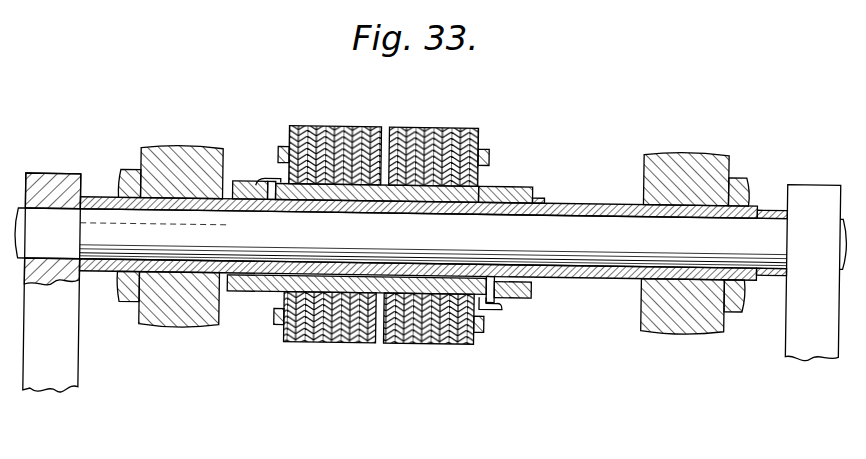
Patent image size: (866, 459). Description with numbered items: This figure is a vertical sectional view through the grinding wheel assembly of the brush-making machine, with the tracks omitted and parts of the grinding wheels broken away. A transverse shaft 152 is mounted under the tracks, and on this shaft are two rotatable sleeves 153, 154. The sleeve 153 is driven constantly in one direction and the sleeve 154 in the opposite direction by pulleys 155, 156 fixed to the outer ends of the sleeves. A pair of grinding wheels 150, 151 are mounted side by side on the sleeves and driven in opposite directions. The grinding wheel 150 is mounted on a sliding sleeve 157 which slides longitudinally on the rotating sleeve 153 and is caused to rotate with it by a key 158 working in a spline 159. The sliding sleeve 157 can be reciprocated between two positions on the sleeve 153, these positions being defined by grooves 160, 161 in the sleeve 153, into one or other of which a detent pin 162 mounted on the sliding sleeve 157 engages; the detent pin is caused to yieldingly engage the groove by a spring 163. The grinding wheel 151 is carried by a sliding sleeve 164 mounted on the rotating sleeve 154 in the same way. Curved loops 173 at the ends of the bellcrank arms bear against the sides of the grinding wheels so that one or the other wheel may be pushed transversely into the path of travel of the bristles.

The grinding wheel 150 is at (440, 121).
The grinding wheel 151 is at (355, 109).
The transverse shaft 152 is at (595, 217).
The rotatable sleeve 153 is at (588, 275).
The rotatable sleeve 154 is at (157, 266).
The pulley 155 is at (712, 143).
The pulley 156 is at (192, 146).
The sliding sleeve 157 is at (525, 178).
The key 158 is at (536, 191).
The spline 159 is at (577, 192).
The groove 160 is at (587, 272).
The groove 161 is at (532, 278).
The detent pin 162 is at (252, 175).
The spring 163 is at (498, 301).
The sliding sleeve 164 is at (248, 292).
The curved loop 173 is at (278, 147).